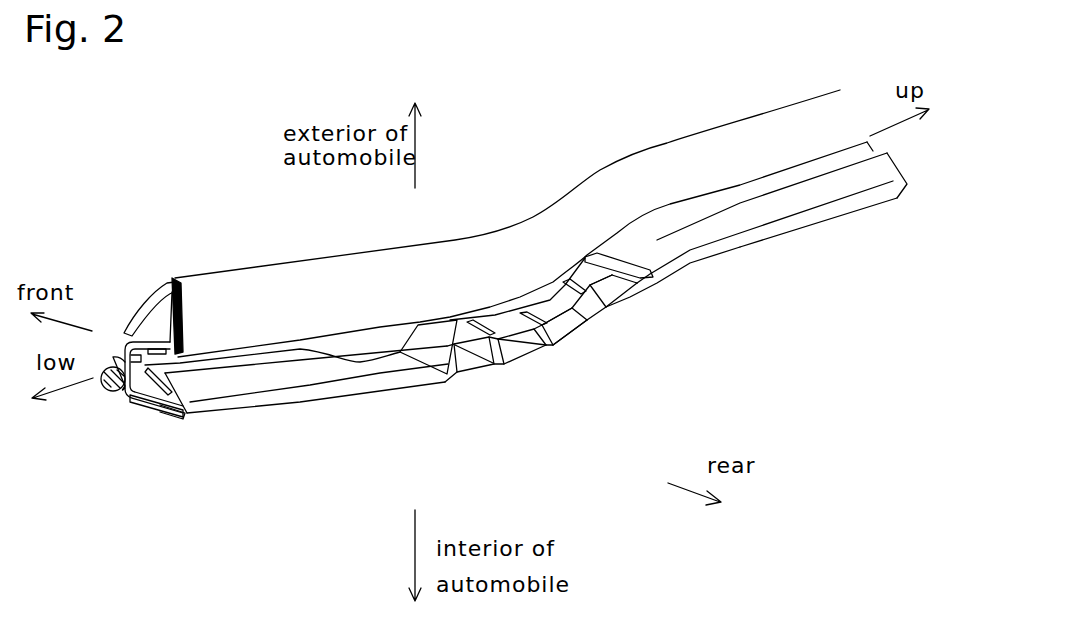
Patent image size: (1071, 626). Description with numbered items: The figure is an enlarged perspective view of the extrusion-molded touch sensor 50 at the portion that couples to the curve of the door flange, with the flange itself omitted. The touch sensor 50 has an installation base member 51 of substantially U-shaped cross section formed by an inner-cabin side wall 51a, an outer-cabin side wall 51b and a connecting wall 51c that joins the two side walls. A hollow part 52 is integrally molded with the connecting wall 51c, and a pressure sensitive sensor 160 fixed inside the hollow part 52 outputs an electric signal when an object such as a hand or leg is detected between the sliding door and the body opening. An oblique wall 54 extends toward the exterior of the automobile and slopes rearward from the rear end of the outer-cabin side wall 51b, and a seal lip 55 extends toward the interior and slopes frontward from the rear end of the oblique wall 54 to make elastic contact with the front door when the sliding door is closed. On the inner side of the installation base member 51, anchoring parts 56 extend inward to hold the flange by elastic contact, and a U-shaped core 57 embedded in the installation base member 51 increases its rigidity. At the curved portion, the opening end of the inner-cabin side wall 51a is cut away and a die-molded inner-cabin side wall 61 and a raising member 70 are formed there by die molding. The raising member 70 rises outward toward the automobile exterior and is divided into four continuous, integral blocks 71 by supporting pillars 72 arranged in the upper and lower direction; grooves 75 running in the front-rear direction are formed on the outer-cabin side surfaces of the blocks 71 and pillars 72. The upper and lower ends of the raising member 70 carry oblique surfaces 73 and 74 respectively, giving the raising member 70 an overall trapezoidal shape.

The touch sensor 50 is at (533, 181).
The installation base member 51 is at (152, 413).
The inner-cabin side wall 51a is at (137, 413).
The outer-cabin side wall 51b is at (192, 320).
The connecting wall 51c is at (123, 340).
The hollow part 52 is at (107, 355).
The oblique wall 54 is at (770, 125).
The seal lip 55 is at (137, 290).
The anchoring parts 56 is at (822, 190).
The core 57 is at (172, 423).
The die-molded inner-cabin side wall 61 is at (518, 368).
The raising member 70 is at (597, 358).
The blocks 71 is at (625, 280).
The supporting pillars 72 is at (605, 302).
The oblique surface 73 is at (630, 262).
The oblique surface 74 is at (408, 336).
The grooves 75 is at (468, 320).
The sensor 160 is at (107, 398).